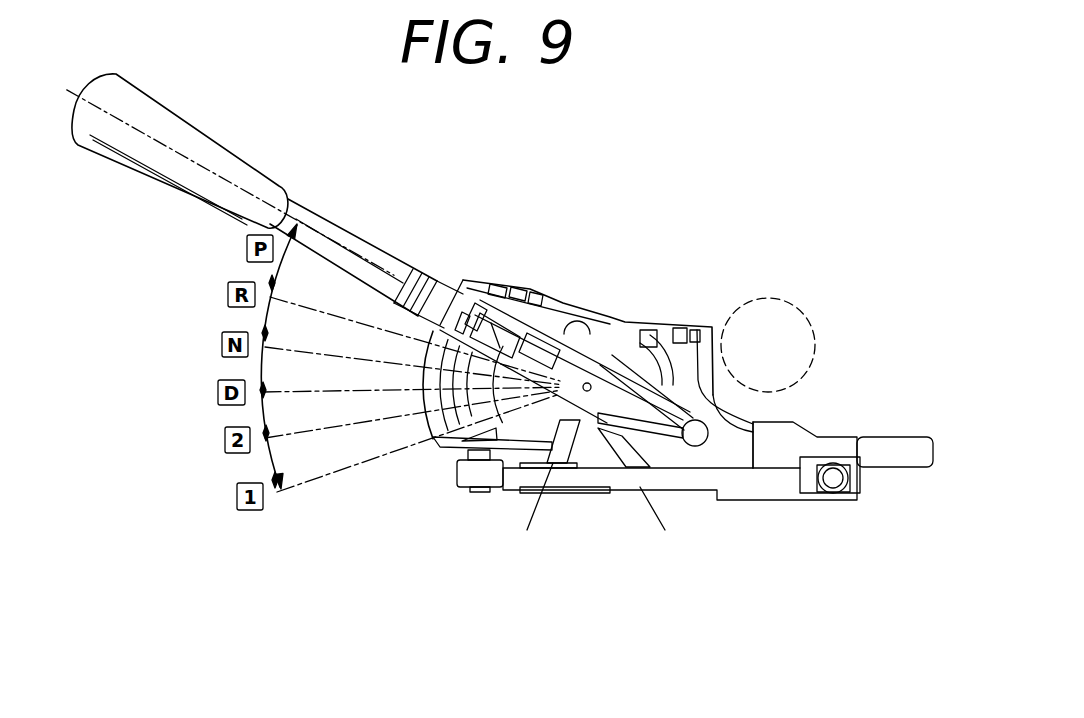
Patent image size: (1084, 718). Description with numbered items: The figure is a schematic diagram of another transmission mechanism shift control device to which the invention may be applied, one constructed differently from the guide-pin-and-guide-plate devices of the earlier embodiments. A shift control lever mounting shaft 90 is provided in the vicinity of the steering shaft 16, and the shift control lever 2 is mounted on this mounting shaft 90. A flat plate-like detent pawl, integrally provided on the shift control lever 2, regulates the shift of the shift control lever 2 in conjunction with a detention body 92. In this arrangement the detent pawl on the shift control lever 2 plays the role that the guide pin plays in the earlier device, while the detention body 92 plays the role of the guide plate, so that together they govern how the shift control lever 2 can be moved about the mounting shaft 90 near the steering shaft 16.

The shift control lever 2 is at (350, 237).
The steering shaft 16 is at (802, 308).
The shift control lever mounting shaft 90 is at (587, 387).
The detention body 92 is at (437, 433).